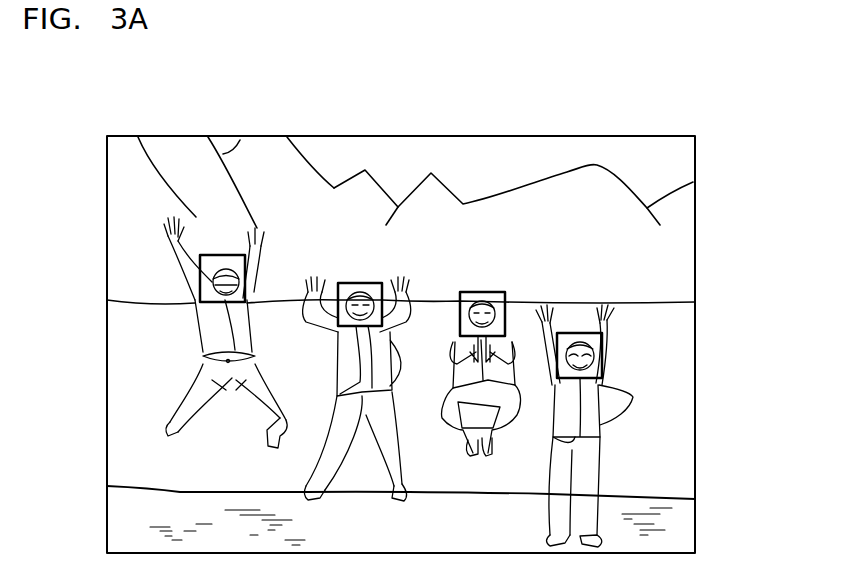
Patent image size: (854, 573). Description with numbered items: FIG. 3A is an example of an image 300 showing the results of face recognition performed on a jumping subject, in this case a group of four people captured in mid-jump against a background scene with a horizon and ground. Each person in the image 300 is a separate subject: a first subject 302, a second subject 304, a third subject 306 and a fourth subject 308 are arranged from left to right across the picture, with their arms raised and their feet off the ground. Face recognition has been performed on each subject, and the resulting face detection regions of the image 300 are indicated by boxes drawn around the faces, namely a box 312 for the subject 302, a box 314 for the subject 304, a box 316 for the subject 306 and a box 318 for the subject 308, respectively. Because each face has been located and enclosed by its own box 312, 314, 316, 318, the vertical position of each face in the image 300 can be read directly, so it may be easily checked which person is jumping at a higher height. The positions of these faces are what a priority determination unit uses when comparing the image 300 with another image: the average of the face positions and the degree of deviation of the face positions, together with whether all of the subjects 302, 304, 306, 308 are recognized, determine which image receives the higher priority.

The image 300 is at (708, 126).
The subject 302 is at (214, 247).
The subject 304 is at (354, 268).
The subject 306 is at (475, 279).
The subject 308 is at (573, 296).
The box 312 is at (225, 255).
The box 314 is at (368, 283).
The box 316 is at (490, 292).
The box 318 is at (592, 333).